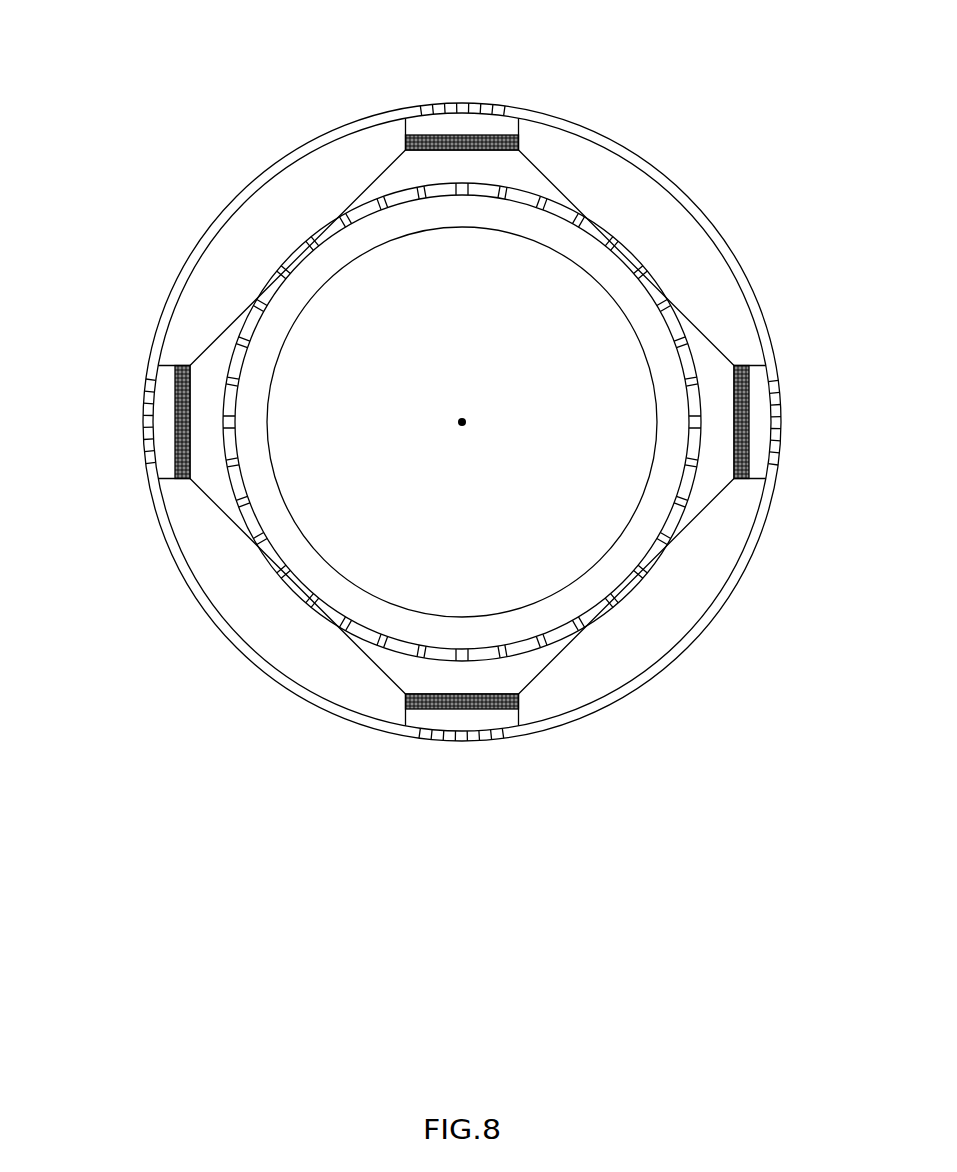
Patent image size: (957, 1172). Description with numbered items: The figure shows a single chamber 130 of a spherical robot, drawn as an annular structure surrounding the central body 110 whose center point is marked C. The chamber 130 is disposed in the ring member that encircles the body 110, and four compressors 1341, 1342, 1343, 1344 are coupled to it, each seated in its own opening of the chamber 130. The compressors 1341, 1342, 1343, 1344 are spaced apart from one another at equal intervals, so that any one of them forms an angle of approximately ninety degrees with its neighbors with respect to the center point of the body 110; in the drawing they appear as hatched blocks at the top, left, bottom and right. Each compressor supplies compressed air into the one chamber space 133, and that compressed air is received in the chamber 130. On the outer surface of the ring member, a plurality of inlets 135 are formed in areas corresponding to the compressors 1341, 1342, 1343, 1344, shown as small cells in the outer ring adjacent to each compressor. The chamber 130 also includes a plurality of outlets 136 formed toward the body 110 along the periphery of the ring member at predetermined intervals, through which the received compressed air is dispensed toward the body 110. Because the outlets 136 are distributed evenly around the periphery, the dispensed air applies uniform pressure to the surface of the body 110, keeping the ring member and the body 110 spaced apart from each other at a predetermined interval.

The body 110 is at (448, 368).
The chamber 130 is at (325, 207).
The chamber space 133 is at (447, 167).
The inlets 135 is at (497, 104).
The outlets 136 is at (255, 302).
The compressor 1341 is at (512, 140).
The compressor 1342 is at (178, 368).
The compressor 1343 is at (413, 700).
The compressor 1344 is at (745, 477).